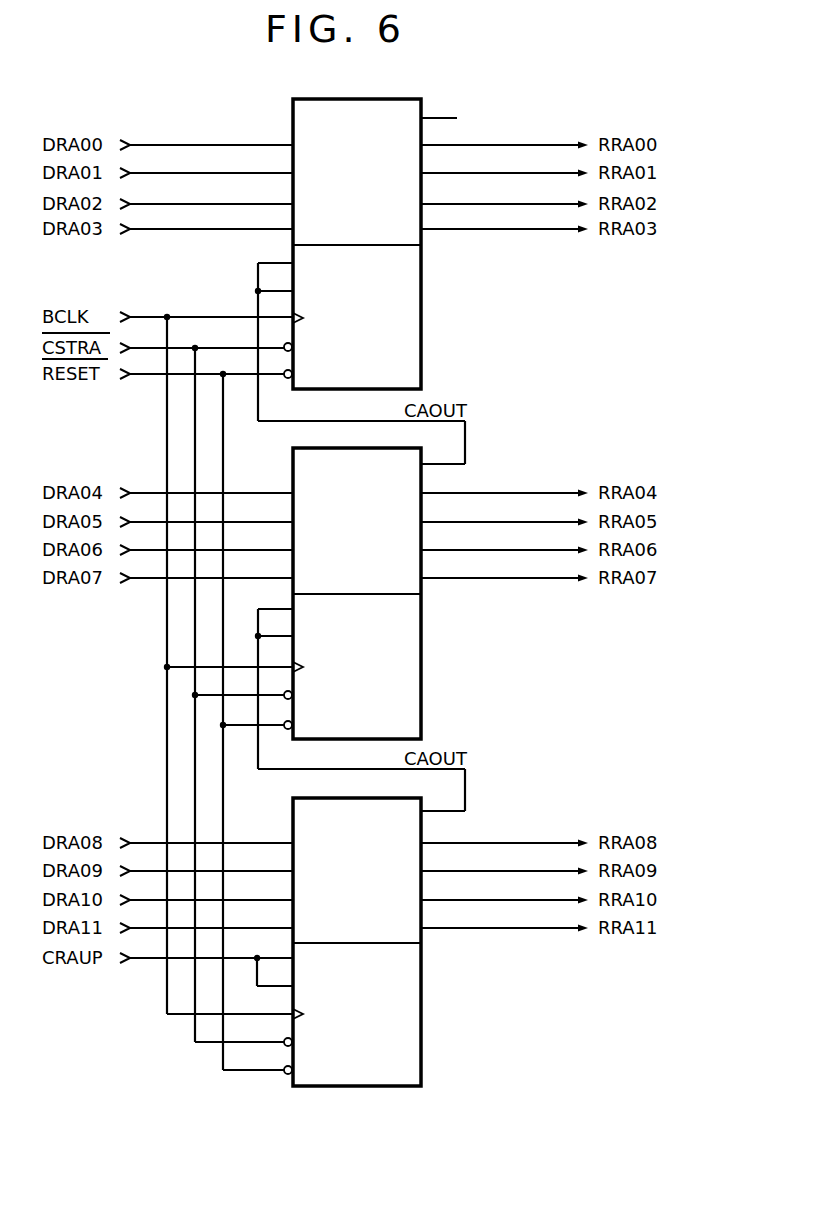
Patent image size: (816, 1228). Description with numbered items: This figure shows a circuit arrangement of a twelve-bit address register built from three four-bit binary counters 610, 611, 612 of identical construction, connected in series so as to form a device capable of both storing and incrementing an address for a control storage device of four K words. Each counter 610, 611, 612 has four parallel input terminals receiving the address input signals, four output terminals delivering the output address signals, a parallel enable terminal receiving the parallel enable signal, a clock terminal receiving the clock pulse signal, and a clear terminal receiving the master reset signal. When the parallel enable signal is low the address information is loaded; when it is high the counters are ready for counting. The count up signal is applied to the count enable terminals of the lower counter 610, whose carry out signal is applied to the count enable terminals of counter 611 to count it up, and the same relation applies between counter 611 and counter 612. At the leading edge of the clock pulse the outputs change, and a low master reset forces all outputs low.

The 4-bit binary counter 612 is at (424, 326).
The 4-bit binary counter 611 is at (424, 668).
The 4-bit binary counter 610 is at (424, 1015).